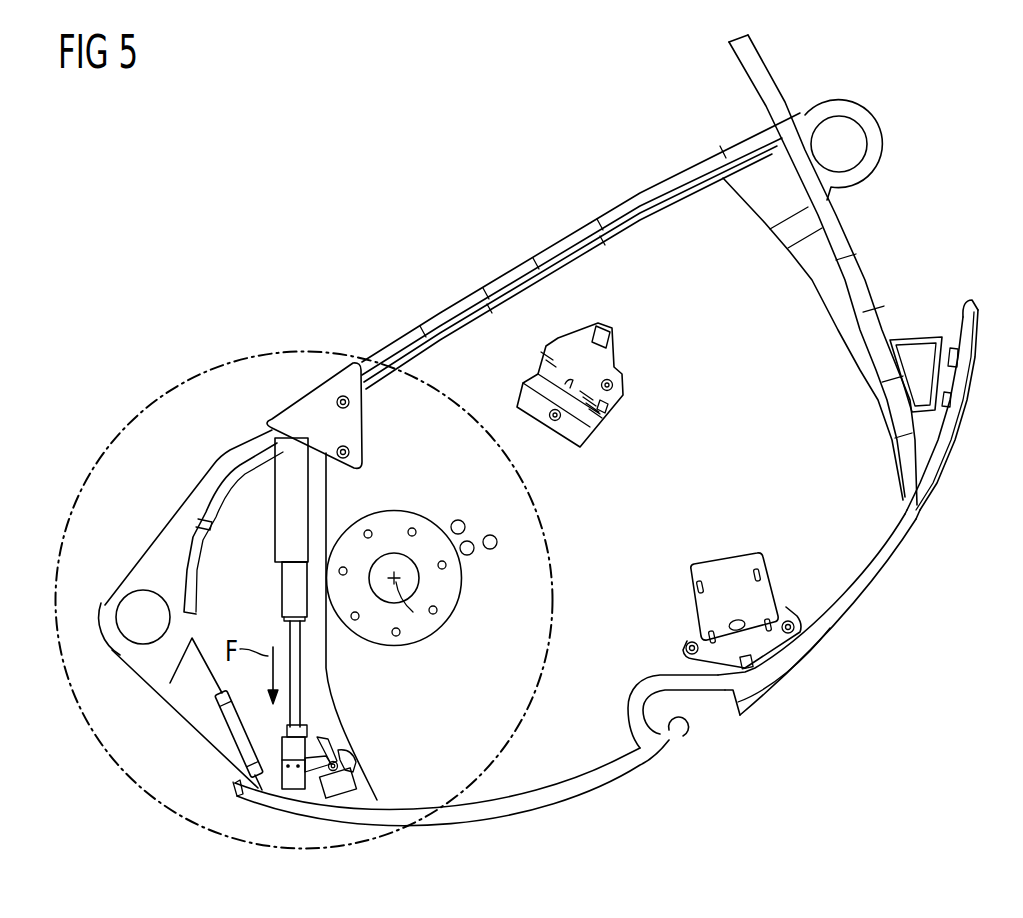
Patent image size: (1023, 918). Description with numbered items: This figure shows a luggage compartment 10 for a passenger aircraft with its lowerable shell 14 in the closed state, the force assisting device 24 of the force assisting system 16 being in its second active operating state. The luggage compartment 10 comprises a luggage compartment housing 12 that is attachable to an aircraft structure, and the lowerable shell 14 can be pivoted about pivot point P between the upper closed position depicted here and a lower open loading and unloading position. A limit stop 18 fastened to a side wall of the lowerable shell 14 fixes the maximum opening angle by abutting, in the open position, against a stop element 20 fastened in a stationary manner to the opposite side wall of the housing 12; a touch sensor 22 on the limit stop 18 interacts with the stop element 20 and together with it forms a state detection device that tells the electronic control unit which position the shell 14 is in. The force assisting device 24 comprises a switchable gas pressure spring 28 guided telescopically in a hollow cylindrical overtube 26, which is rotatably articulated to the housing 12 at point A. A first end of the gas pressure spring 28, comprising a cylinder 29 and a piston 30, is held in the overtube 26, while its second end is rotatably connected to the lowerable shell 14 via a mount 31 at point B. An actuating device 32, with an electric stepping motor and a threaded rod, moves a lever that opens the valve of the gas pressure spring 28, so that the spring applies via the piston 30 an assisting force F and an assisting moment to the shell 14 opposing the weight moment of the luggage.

The luggage compartment 10 is at (960, 175).
The luggage compartment housing 12 is at (574, 241).
The lowerable shell 14 is at (853, 567).
The force assisting system 16 is at (187, 479).
The limit stop 18 is at (583, 349).
The stop element 20 is at (733, 572).
The touch sensor 22 is at (605, 330).
The force assisting device 24 is at (236, 575).
The overtube 26 is at (285, 493).
The gas pressure spring 28 is at (278, 594).
The cylinder 29 is at (290, 588).
The piston 30 is at (294, 690).
The mount 31 is at (293, 783).
The actuating device 32 is at (367, 778).